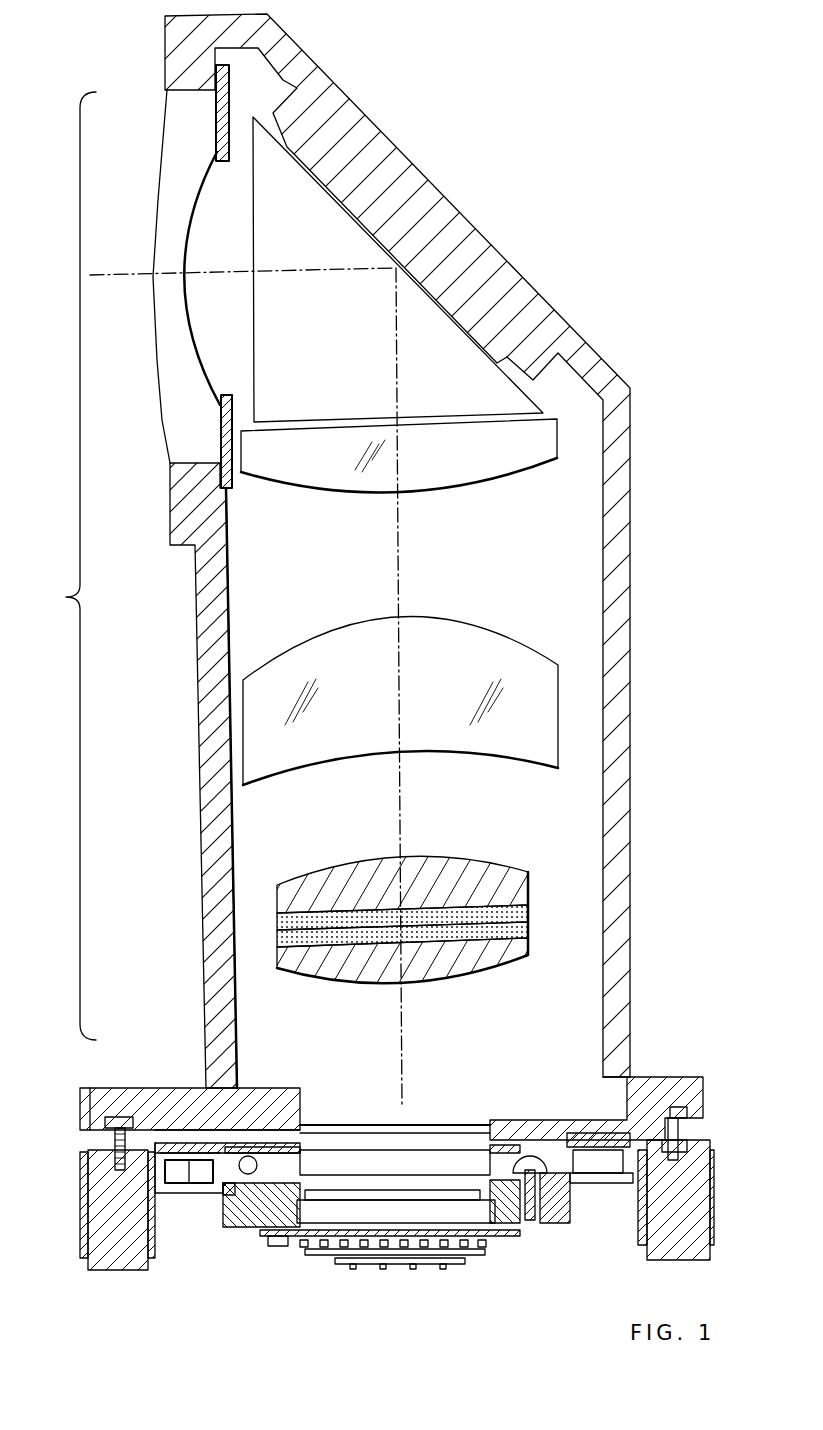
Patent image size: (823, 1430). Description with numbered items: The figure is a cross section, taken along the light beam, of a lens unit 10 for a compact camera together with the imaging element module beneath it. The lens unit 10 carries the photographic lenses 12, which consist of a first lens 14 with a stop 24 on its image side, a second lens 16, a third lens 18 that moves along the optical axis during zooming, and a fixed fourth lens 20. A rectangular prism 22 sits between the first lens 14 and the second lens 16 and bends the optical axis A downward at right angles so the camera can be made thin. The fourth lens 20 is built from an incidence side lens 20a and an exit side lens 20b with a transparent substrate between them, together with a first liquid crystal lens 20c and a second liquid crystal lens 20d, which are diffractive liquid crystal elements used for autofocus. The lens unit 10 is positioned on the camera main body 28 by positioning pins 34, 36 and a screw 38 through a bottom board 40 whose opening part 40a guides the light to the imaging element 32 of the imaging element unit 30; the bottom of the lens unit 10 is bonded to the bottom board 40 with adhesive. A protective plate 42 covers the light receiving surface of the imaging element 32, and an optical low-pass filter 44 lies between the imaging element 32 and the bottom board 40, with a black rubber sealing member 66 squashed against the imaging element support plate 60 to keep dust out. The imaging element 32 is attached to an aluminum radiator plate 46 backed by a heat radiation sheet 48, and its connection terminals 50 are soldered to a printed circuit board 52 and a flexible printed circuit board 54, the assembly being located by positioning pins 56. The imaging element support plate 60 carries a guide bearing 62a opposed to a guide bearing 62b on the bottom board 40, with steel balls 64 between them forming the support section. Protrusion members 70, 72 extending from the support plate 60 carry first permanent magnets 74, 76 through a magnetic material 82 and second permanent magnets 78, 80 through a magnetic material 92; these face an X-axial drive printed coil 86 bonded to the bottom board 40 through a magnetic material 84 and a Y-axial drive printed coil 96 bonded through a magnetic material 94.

The lens unit 10 is at (633, 616).
The photographic lenses 12 is at (64, 566).
The first lens 14 is at (160, 407).
The second lens 16 is at (528, 472).
The third lens 18 is at (530, 647).
The fourth lens 20 is at (483, 898).
The incidence side lens 20a is at (530, 877).
The exit side lens 20b is at (530, 940).
The first liquid crystal lens 20c is at (530, 905).
The second liquid crystal lens 20d is at (530, 921).
The rectangular prism 22 is at (443, 337).
The stop 24 is at (228, 68).
The camera main body 28 is at (715, 1213).
The imaging element unit 30 is at (414, 1203).
The imaging element 32 is at (348, 1210).
The positioning pin 34 is at (690, 1107).
The positioning pin 36 is at (687, 1147).
The screw 38 is at (122, 1115).
The bottom board 40 is at (427, 1138).
The opening part 40a is at (468, 1120).
The protective plate 42 is at (370, 1193).
The optical low-pass filter 44 is at (403, 1163).
The radiator plate 46 is at (490, 1236).
The heat radiation sheet 48 is at (287, 1243).
The connection terminals 50 is at (305, 1260).
The printed circuit board 52 is at (385, 1262).
The flexible printed circuit board 54 is at (445, 1256).
The positioning pins 56 is at (520, 1242).
The imaging element support plate 60 is at (238, 1222).
The guide bearing 62a is at (223, 1187).
The guide bearing 62b is at (250, 1148).
The steel balls 64 is at (255, 1158).
The sealing member 66 is at (495, 1145).
The protrusion member 70 is at (173, 1190).
The protrusion member 72 is at (622, 1182).
The first permanent magnet 74 is at (165, 1147).
The first permanent magnet 76 is at (257, 1147).
The second permanent magnet 78 is at (405, 1088).
The second permanent magnet 80 is at (640, 1112).
The magnetic material 82 is at (197, 1190).
The magnetic material 84 is at (157, 1130).
The printed coil 86 is at (203, 1147).
The magnetic material 92 is at (648, 1176).
The magnetic material 94 is at (574, 1118).
The printed coil 96 is at (640, 1053).
The optical axis A is at (404, 562).